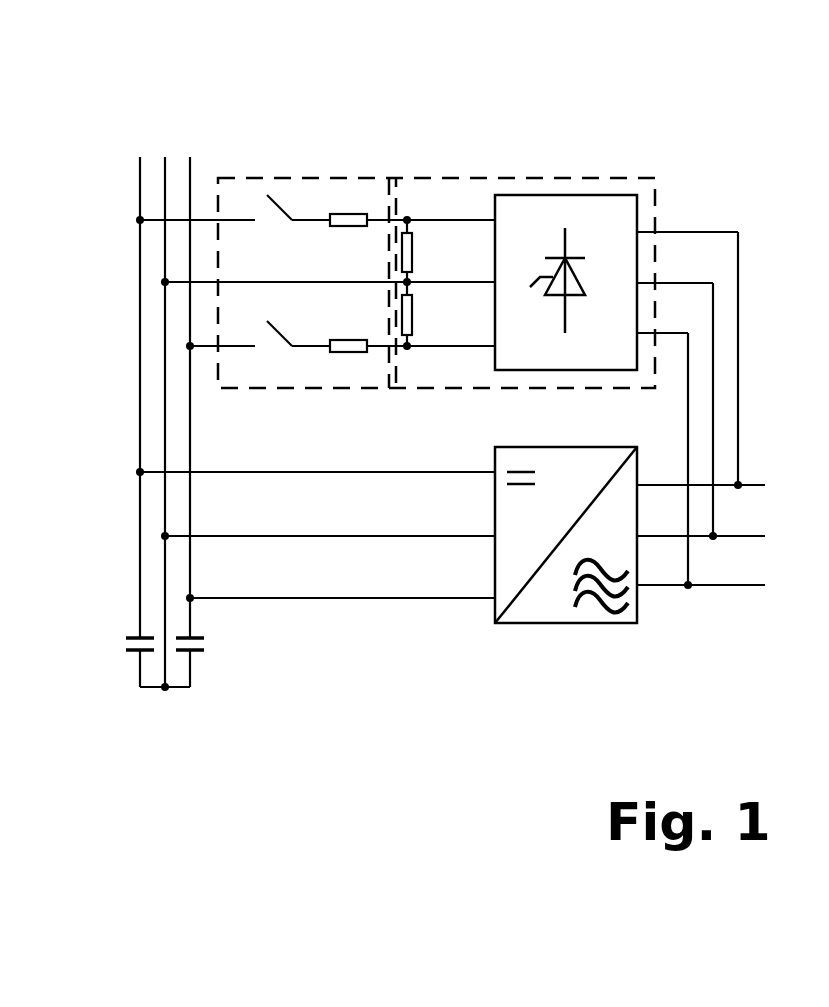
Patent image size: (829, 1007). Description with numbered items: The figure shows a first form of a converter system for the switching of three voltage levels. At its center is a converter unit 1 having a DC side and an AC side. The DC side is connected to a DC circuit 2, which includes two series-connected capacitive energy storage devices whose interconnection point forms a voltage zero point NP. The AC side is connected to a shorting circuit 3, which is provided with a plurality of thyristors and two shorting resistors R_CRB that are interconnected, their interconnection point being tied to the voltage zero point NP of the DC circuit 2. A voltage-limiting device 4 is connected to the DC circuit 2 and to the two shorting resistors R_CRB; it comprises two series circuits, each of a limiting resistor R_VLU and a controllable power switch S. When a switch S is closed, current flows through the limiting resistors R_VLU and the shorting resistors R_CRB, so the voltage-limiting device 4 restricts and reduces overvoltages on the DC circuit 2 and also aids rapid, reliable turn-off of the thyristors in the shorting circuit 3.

The converter unit 1 is at (558, 623).
The DC circuit 2 is at (115, 230).
The shorting circuit 3 is at (545, 176).
The voltage-limiting device 4 is at (313, 176).